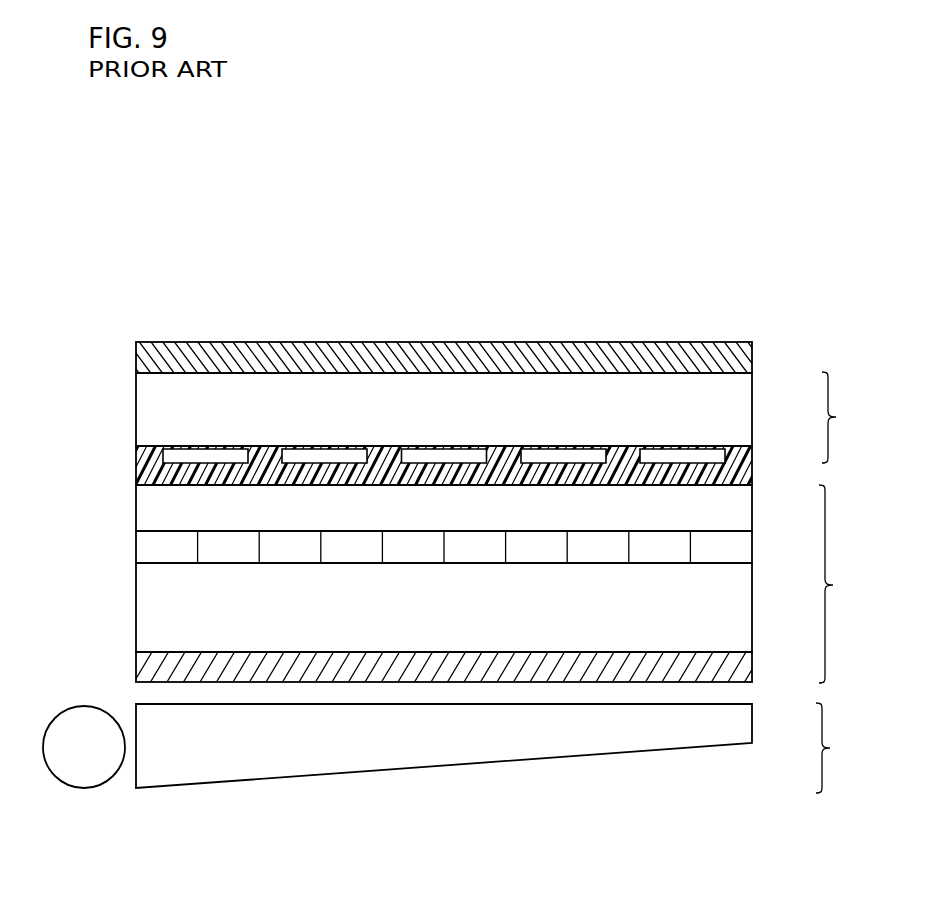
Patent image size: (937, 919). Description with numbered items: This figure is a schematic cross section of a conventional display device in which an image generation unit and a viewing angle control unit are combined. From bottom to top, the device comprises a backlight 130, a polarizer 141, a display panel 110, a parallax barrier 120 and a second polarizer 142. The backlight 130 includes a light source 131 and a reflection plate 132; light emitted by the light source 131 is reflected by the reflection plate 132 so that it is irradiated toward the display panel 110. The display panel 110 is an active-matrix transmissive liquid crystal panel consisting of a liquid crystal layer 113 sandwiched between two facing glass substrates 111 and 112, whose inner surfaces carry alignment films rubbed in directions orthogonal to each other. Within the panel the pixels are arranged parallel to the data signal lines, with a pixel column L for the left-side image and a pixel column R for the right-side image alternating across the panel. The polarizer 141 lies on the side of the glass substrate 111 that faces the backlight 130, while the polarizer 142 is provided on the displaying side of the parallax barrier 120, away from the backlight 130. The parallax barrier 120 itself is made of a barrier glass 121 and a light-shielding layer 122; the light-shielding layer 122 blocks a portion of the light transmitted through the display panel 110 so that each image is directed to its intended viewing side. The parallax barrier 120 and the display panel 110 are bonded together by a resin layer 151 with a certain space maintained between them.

The display panel 110 is at (848, 584).
The glass substrate 111 is at (752, 625).
The glass substrate 112 is at (752, 504).
The liquid crystal layer 113 is at (752, 549).
The parallax barrier 120 is at (853, 417).
The barrier glass 121 is at (747, 414).
The light-shielding layer 122 is at (688, 458).
The backlight 130 is at (847, 748).
The light source 131 is at (85, 714).
The reflection plate 132 is at (752, 725).
The polarizer 141 is at (752, 667).
The polarizer 142 is at (752, 362).
The resin layer 151 is at (752, 474).